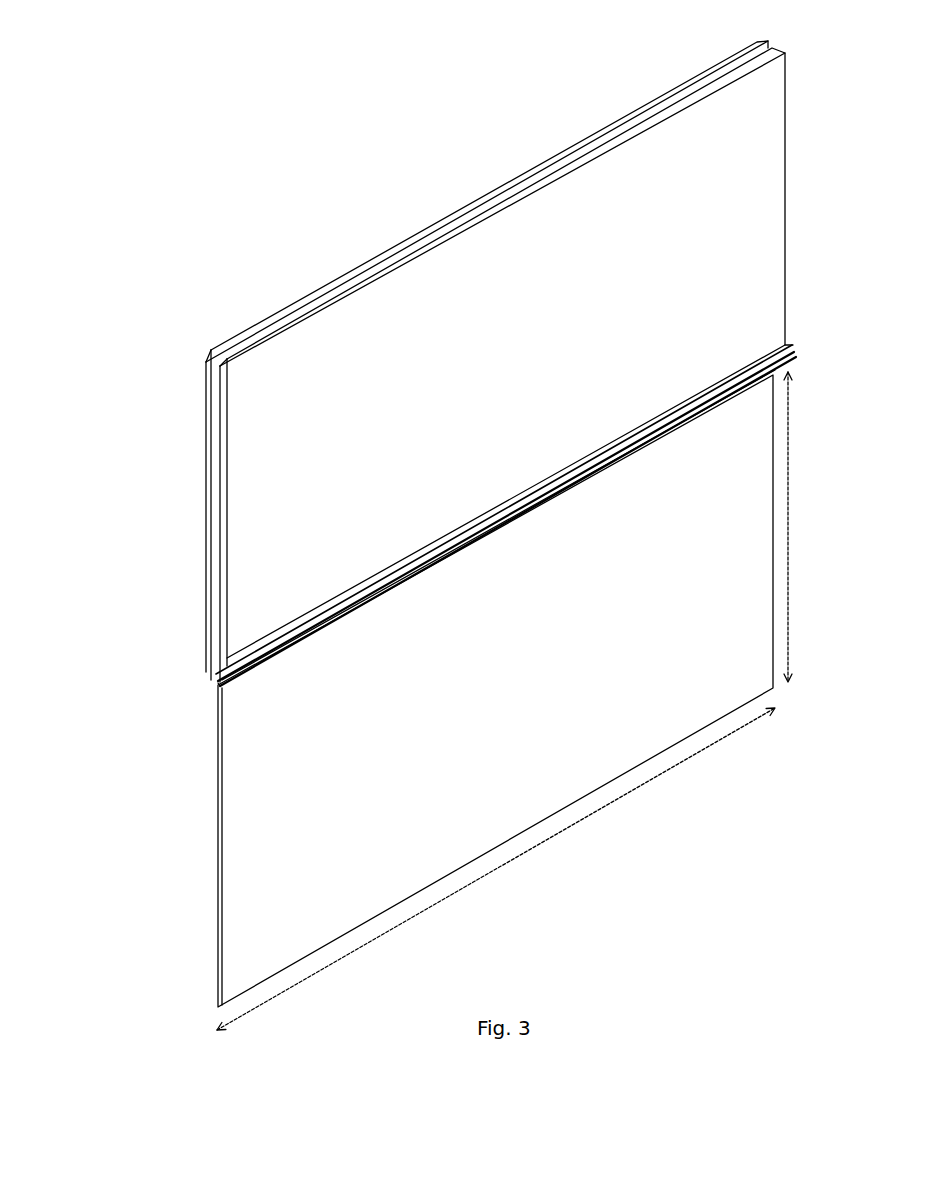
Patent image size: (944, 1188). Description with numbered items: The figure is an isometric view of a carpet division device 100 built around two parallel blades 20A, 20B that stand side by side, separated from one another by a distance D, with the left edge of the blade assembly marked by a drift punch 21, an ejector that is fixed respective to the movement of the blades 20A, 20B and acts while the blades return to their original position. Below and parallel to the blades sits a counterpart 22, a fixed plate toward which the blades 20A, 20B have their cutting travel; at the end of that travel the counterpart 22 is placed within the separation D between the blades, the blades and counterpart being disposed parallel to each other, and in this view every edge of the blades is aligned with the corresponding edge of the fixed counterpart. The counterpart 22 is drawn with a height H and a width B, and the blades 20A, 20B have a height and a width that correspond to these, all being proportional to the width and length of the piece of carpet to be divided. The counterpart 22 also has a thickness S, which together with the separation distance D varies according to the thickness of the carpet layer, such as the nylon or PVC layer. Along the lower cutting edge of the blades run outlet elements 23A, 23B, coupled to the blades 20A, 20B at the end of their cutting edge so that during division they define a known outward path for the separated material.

The device 100 is at (205, 165).
The blade 20A is at (455, 237).
The blade 20B is at (502, 365).
The drift punch 21 is at (220, 566).
The counterpart 22 is at (215, 815).
The outlet element 23A is at (204, 641).
The outlet element 23B is at (142, 662).
The separation distance D is at (220, 417).
The height H is at (787, 565).
The width B is at (595, 822).
The thickness S is at (222, 855).